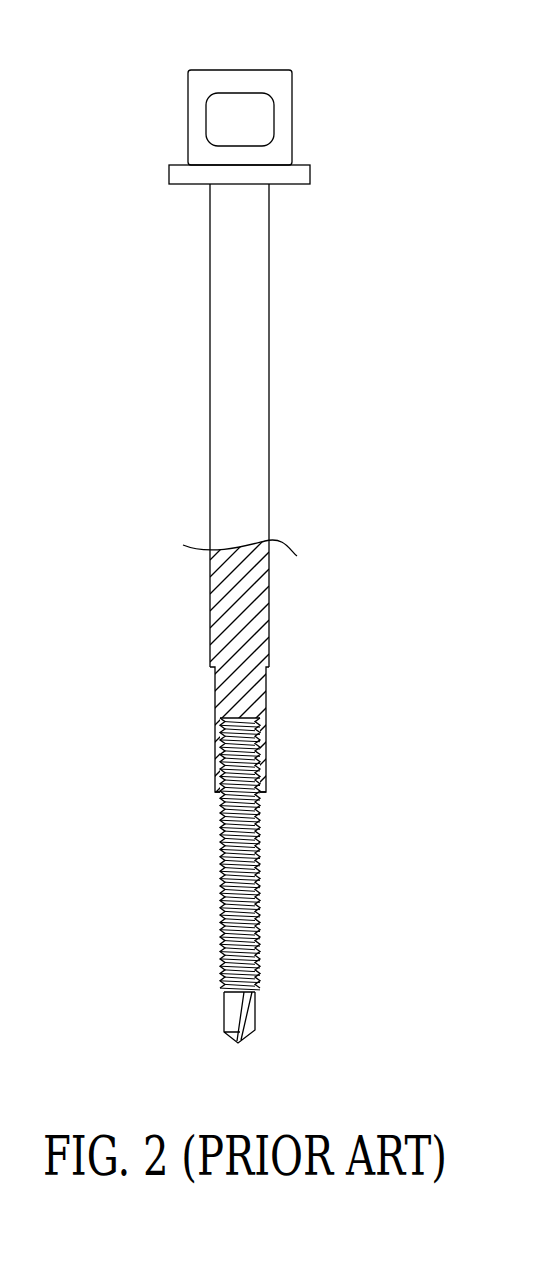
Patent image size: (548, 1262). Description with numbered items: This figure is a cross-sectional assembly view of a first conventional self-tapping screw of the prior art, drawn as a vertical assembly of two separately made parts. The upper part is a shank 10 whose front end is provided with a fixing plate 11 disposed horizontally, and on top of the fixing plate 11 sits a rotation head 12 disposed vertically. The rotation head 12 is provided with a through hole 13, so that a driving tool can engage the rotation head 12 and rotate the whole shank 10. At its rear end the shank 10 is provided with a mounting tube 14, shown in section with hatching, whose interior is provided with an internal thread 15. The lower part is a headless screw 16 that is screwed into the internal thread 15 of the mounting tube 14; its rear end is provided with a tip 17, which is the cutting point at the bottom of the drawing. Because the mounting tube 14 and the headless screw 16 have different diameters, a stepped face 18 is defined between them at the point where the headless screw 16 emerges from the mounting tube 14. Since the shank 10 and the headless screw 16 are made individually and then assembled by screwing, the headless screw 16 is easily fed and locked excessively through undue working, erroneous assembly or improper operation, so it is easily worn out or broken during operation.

The shank 10 is at (239, 351).
The fixing plate 11 is at (190, 176).
The rotation head 12 is at (243, 80).
The through hole 13 is at (233, 121).
The mounting tube 14 is at (233, 690).
The internal thread 15 is at (217, 755).
The headless screw 16 is at (257, 882).
The tip 17 is at (250, 1023).
The stepped face 18 is at (218, 788).